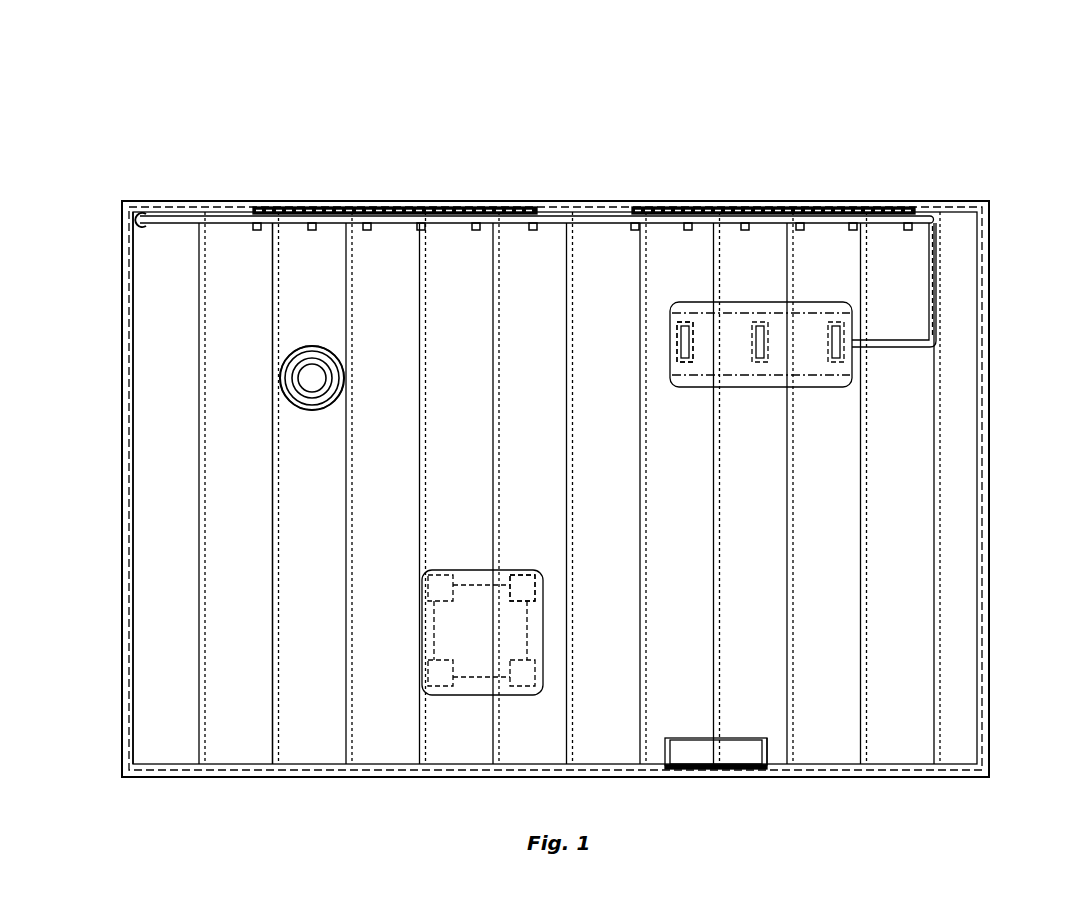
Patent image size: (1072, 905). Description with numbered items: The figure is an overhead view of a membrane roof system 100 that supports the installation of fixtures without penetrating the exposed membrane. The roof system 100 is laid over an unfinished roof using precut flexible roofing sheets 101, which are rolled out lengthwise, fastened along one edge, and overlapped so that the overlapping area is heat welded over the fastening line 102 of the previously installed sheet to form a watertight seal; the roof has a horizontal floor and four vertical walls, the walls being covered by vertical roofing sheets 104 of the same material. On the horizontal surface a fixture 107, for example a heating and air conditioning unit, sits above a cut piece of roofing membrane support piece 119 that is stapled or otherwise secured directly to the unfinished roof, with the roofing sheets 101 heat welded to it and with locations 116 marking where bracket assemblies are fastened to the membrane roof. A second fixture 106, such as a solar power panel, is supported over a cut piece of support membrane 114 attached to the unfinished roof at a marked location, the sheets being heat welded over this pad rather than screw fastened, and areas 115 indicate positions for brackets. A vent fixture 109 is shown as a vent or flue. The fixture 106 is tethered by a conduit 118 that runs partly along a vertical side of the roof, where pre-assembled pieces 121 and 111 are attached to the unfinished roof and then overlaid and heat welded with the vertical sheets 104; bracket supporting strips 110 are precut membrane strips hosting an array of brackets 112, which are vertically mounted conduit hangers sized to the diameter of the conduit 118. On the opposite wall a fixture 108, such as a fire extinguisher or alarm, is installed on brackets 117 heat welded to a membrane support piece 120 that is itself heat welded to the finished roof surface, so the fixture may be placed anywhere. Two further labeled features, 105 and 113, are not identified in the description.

The membrane roof system 100 is at (632, 122).
The roofing sheets 101 is at (315, 331).
The fastening line 102 is at (280, 516).
The vertical roofing sheets 104 is at (133, 657).
The container frame 105 is at (990, 487).
The fixture 106 is at (760, 302).
The fixture 107 is at (545, 655).
The fixture 108 is at (735, 740).
The vent fixture 109 is at (282, 378).
The bracket supporting strips 110 is at (395, 206).
The pre-assembled piece 111 is at (770, 206).
The brackets 112 is at (476, 231).
The coil outer ring 113 is at (340, 352).
The support membrane 114 is at (757, 368).
The areas 115 is at (680, 343).
The locations 116 is at (535, 592).
The brackets 117 is at (767, 752).
The conduit 118 is at (822, 231).
The support piece 119 is at (455, 585).
The membrane support piece 120 is at (750, 770).
The pre-assembled piece 121 is at (312, 206).